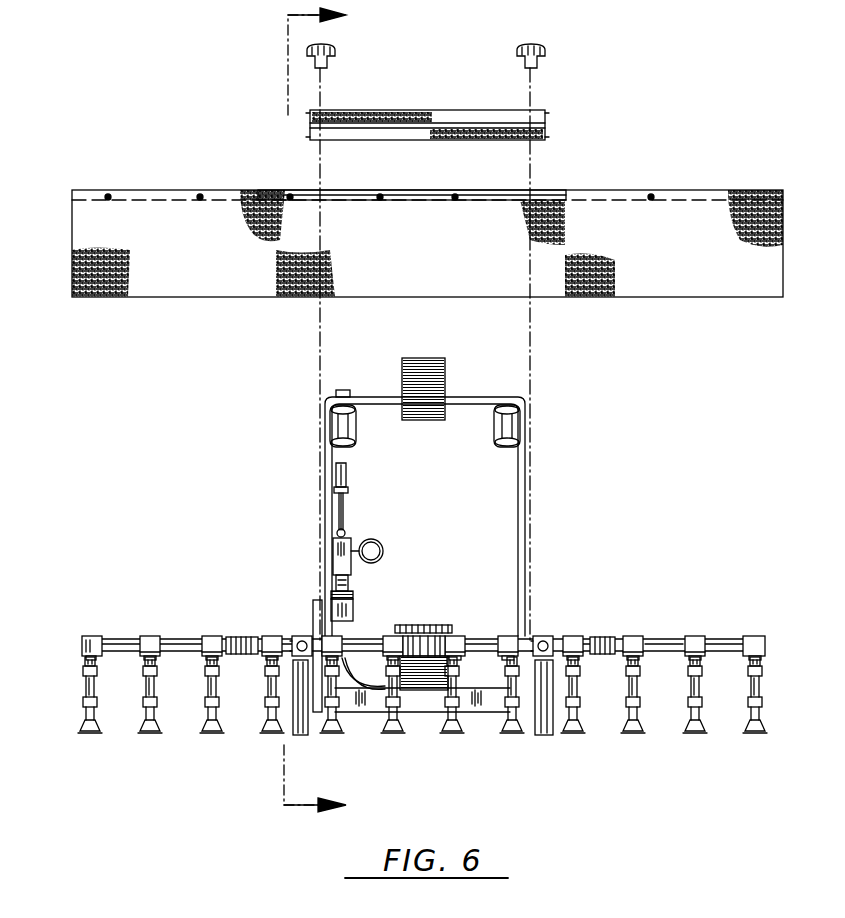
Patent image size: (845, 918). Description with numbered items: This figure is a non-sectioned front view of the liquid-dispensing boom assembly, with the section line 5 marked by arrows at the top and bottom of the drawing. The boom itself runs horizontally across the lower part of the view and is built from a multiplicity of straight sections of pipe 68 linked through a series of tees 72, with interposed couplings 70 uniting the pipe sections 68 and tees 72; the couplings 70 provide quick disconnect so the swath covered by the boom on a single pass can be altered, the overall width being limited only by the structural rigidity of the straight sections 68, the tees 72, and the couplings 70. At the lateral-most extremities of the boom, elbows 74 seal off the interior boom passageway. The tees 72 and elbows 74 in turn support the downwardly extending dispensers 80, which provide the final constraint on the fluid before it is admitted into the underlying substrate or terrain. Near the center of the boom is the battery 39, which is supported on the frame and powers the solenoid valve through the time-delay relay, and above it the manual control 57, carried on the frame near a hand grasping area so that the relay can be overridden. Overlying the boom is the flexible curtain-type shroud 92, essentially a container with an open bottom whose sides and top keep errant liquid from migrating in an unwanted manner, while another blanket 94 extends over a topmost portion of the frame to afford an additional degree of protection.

The section line 5- 5 is at (326, 411).
The battery 39 is at (408, 625).
The manual control 57 is at (341, 390).
The straight sections of pipe 68 is at (118, 640).
The couplings 70 is at (235, 637).
The tees 72 is at (150, 640).
The elbows 74 is at (85, 638).
The dispensers 80 is at (136, 727).
The curtain-type shroud 92 is at (245, 190).
The blanket 94 is at (462, 115).